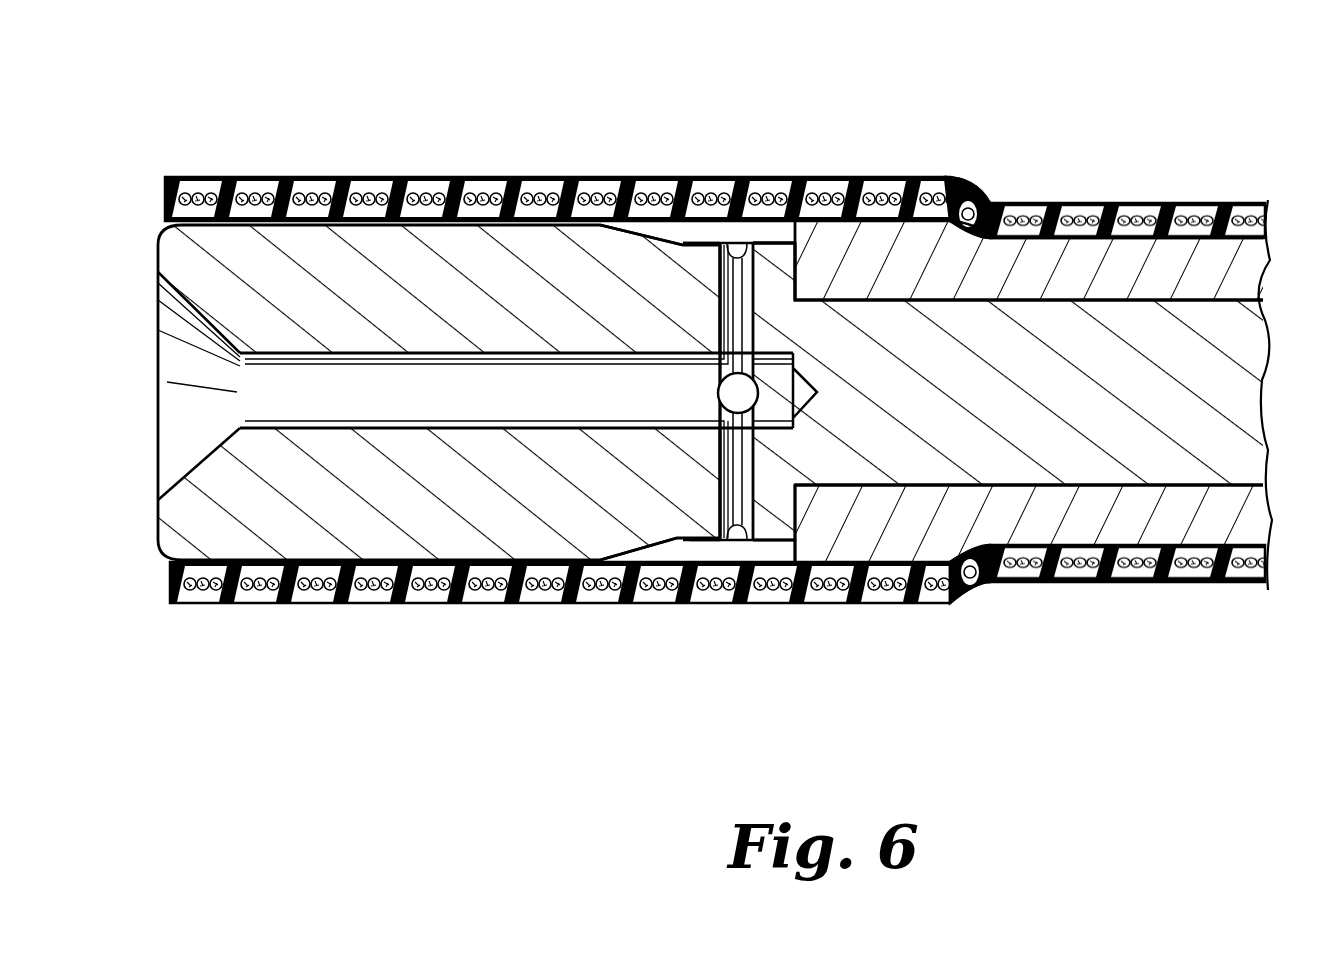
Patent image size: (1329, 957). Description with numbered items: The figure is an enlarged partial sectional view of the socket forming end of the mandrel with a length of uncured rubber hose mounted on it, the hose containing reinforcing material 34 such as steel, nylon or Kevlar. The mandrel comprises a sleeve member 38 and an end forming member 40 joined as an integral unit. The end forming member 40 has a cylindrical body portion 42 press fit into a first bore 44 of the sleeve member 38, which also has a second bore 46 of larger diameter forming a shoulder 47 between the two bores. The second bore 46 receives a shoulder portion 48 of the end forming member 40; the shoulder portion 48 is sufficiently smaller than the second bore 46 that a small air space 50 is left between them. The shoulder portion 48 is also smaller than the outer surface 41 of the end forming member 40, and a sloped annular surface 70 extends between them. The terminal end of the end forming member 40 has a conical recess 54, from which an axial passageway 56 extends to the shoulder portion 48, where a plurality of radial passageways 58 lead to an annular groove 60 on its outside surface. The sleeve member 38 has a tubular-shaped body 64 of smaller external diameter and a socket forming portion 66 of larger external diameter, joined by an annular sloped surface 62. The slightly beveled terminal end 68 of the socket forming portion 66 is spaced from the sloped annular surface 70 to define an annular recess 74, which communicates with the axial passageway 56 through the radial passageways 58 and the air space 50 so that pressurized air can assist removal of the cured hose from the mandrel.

The reinforcing material 34 is at (279, 200).
The sleeve member 38 is at (1226, 242).
The end forming member 40 is at (545, 250).
The outer surface 41 is at (457, 218).
The cylindrical body portion 42 is at (1180, 468).
The first bore 44 is at (1068, 490).
The second bore 46 is at (795, 548).
The shoulder 47 is at (812, 290).
The shoulder portion 48 is at (800, 272).
The air space 50 is at (737, 250).
The conical recess 54 is at (187, 470).
The axial passageway 56 is at (425, 408).
The radial passageways 58 is at (722, 445).
The annular groove 60 is at (750, 262).
The annular sloped surface 62 is at (967, 235).
The tubular-shaped body 64 is at (1123, 265).
The socket forming portion 66 is at (920, 248).
The terminal end 68 is at (703, 240).
The sloped annular surface 70 is at (662, 235).
The annular recess 74 is at (688, 232).